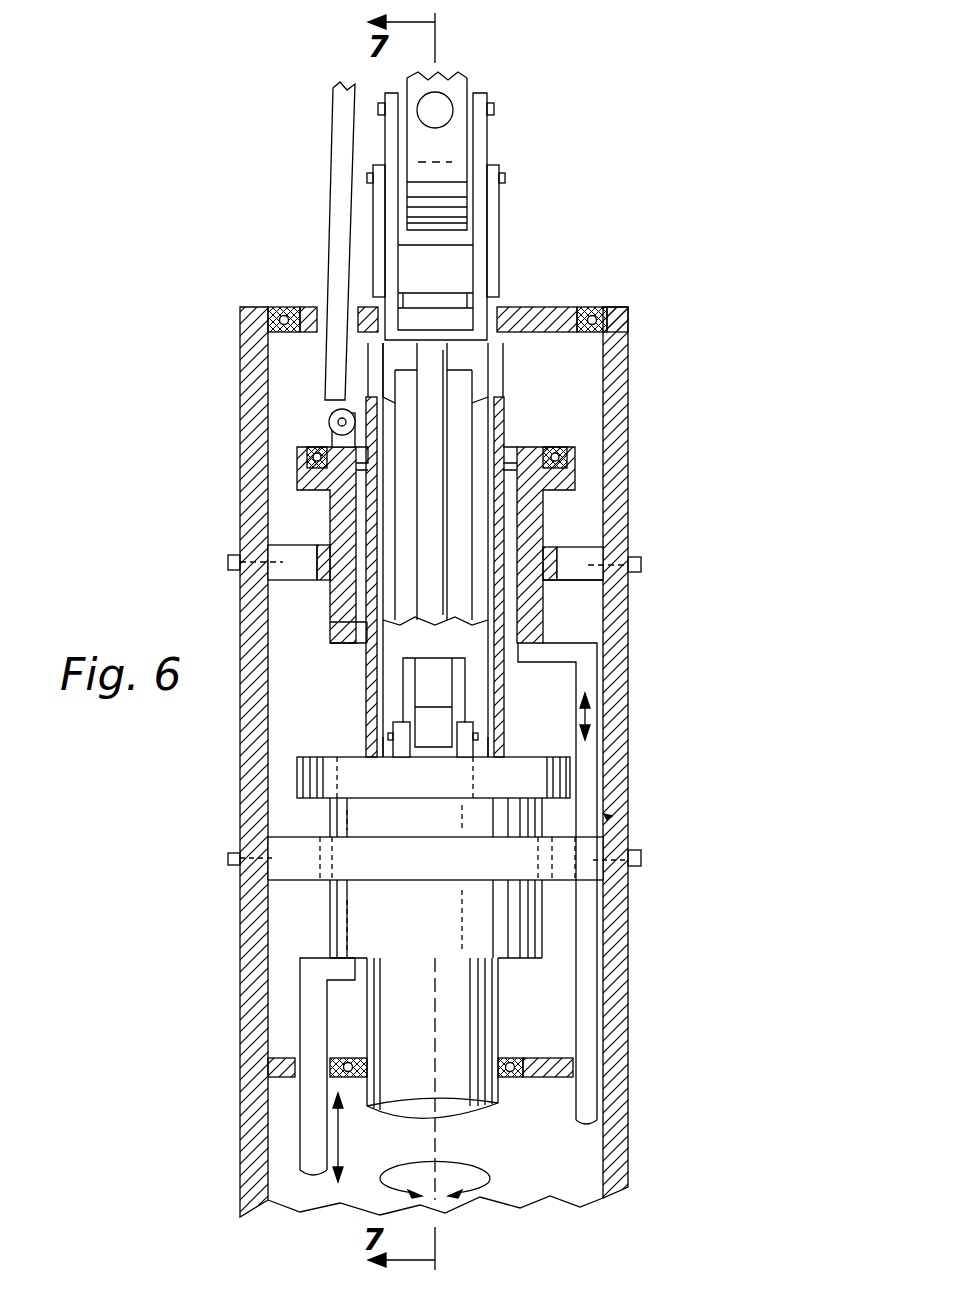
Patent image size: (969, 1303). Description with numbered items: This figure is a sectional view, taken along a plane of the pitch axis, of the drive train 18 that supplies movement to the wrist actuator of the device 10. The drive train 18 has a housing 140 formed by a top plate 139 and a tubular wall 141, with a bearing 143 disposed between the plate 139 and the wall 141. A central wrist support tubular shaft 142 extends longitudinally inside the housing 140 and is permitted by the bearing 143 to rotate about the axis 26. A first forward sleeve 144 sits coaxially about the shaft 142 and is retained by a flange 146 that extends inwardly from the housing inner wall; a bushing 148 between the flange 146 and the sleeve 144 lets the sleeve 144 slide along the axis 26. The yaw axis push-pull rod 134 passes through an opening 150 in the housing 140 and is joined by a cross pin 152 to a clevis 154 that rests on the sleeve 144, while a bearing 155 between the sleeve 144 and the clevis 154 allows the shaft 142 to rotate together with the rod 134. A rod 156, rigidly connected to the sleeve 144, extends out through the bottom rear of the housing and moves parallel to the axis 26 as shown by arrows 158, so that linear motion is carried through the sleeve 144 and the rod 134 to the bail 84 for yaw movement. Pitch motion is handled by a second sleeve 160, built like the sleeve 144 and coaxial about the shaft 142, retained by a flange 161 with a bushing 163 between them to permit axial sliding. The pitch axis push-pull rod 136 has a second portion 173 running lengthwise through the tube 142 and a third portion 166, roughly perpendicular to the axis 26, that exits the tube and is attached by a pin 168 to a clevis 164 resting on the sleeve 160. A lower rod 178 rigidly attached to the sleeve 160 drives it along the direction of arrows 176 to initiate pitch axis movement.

The drive rod 10 is at (514, 106).
The drive train 18 is at (540, 270).
The axis 26 is at (435, 1140).
The bail 84 is at (452, 197).
The yaw axis push-pull rod 134 is at (337, 142).
The pitch axis push-pull rod 136 is at (485, 140).
The top plate 139 is at (538, 320).
The housing 140 is at (624, 429).
The tubular wall 141 is at (612, 385).
The central wrist support tubular shaft 142 is at (498, 427).
The bearing 143 is at (597, 318).
The first forward sleeve 144 is at (543, 523).
The flange 146 is at (580, 557).
The bushing 148 is at (547, 578).
The opening 150 is at (312, 313).
The cross pin 152 is at (335, 420).
The clevis 154 is at (337, 442).
The bearing 155 is at (317, 490).
The rod 156 is at (583, 930).
The arrows 158 is at (588, 713).
The sleeve 160 is at (510, 943).
The flange 161 is at (583, 868).
The bushing 163 is at (582, 826).
The clevis 164 is at (395, 730).
The third portion 166 is at (432, 735).
The pin 168 is at (477, 735).
The second portion 173 is at (427, 472).
The arrows 176 is at (340, 1137).
The lower rod 178 is at (315, 932).